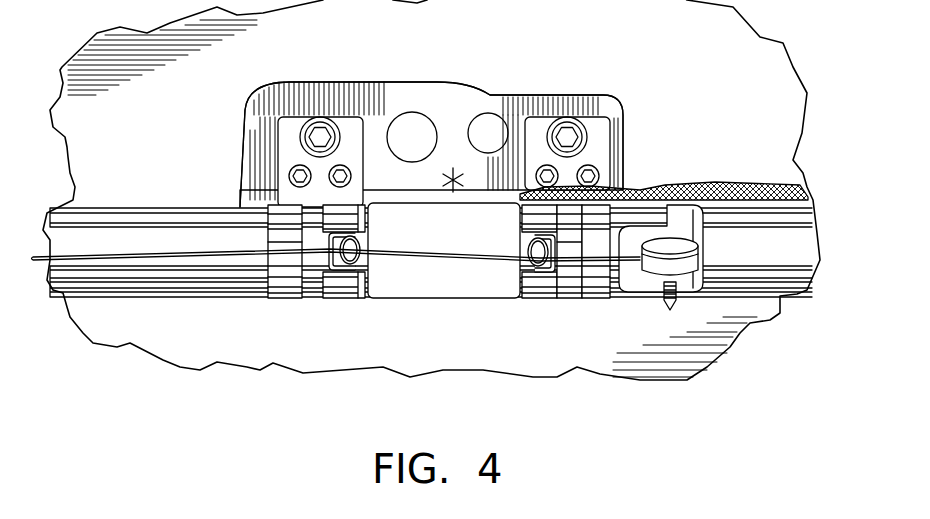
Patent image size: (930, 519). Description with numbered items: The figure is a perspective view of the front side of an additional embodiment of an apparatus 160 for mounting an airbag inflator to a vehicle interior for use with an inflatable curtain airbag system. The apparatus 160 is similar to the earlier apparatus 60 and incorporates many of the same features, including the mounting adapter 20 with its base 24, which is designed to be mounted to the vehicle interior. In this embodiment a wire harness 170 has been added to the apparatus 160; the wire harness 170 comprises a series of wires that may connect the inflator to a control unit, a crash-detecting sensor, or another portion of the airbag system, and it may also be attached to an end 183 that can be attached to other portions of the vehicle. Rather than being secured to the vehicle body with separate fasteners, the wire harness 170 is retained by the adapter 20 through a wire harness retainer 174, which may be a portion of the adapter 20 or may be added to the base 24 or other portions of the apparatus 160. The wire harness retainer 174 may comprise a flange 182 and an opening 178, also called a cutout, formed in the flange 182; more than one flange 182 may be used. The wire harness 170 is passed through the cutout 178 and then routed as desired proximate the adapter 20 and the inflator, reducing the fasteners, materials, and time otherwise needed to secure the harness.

The mounting adapter 20 is at (366, 74).
The base 24 is at (427, 93).
The apparatus 60 is at (215, 195).
The apparatus 160 is at (550, 89).
The wire harness 170 is at (415, 252).
The wire harness retainer 174 is at (323, 259).
The opening 178 is at (537, 265).
The flange 182 is at (333, 298).
The end 183 is at (690, 276).